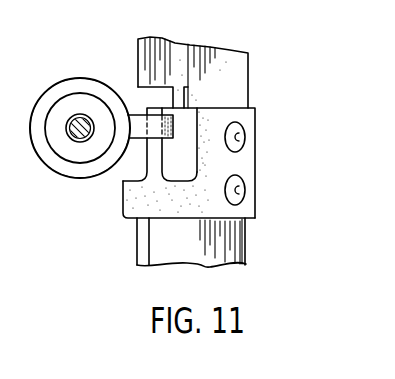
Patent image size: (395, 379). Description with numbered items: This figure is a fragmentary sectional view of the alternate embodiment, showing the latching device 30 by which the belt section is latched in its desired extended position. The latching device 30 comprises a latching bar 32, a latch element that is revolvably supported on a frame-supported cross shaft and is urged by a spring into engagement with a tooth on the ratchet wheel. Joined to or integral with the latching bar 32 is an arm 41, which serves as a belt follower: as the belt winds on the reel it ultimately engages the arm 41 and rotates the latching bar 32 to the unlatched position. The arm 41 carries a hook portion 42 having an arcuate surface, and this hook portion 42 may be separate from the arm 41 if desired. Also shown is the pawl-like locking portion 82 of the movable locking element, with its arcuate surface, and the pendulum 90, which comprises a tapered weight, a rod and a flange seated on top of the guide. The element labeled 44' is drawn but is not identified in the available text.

The latching device 30 is at (248, 82).
The latching bar 32 is at (246, 246).
The arm 41 is at (124, 207).
The hook portion 42 is at (146, 162).
The roller assembly 44' is at (80, 105).
The locking portion 82 is at (138, 112).
The pendulum 90 is at (30, 143).